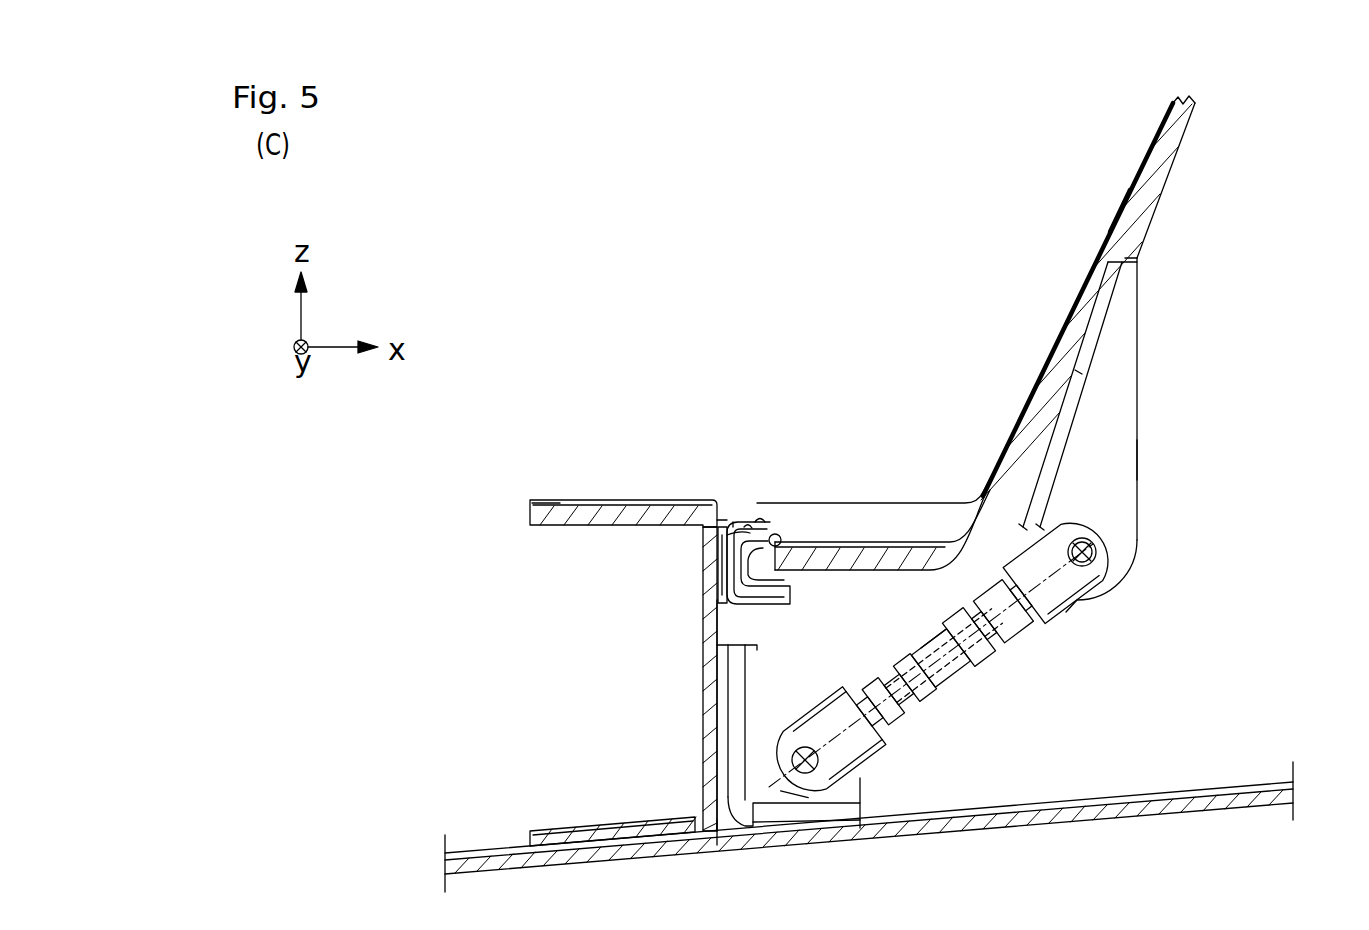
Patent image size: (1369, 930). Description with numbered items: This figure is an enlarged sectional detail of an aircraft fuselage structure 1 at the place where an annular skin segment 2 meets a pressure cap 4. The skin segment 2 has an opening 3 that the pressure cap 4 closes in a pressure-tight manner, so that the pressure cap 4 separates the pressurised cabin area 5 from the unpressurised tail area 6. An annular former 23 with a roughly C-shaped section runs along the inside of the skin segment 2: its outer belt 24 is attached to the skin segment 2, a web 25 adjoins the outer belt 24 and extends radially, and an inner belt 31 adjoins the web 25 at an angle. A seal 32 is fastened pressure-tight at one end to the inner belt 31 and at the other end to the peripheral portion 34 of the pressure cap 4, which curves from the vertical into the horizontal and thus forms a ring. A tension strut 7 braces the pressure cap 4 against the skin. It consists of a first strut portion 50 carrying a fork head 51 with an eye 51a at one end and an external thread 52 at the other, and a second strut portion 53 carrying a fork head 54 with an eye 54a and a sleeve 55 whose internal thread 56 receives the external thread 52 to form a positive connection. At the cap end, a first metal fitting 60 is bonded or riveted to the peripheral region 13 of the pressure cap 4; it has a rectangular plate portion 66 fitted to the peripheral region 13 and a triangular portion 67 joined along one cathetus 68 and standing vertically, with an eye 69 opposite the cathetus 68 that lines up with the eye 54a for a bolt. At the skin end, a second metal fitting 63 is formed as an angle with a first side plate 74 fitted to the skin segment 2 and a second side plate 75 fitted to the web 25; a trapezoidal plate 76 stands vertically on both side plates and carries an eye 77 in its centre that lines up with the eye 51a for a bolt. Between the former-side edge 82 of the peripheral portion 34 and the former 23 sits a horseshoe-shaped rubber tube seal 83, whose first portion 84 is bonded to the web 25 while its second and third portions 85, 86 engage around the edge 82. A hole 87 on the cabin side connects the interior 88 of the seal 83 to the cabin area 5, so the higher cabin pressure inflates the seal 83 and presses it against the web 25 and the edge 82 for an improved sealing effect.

The fuselage structure 1 is at (686, 182).
The annular skin segment 2 is at (1056, 812).
The opening 3 is at (1121, 86).
The pressure cap 4 is at (1176, 150).
The cabin area 5 is at (742, 309).
The tail area 6 is at (1320, 586).
The tension strut 7 is at (964, 690).
The peripheral region 13 is at (1120, 207).
The former 23 is at (542, 488).
The outer belt 24 is at (568, 831).
The web 25 is at (710, 618).
The inner belt 31 is at (610, 505).
The seal 32 is at (750, 528).
The peripheral portion 34 is at (871, 503).
The first strut portion 50 is at (880, 718).
The fork head 51 is at (836, 712).
The eye 51a is at (805, 762).
The external thread 52 is at (922, 662).
The second strut portion 53 is at (1010, 612).
The fork head 54 is at (1062, 596).
The eye 54a is at (1082, 552).
The sleeve 55 is at (975, 640).
The internal thread 56 is at (952, 650).
The first metal fitting 60 is at (1122, 400).
The second metal fitting 63 is at (716, 832).
The rectangular plate portion 66 is at (1127, 283).
The triangular portion 67 is at (1138, 458).
The cathetus 68 is at (1057, 428).
The eye 69 is at (1098, 552).
The first side plate 74 is at (826, 828).
The second side plate 75 is at (712, 700).
The trapezoidal plate 76 is at (818, 702).
The eye 77 is at (830, 770).
The former-side edge 82 is at (778, 534).
The seal 83 is at (718, 510).
The first portion 84 is at (712, 540).
The second portion 85 is at (762, 522).
The third portion 86 is at (793, 592).
The hole 87 is at (738, 522).
The interior 88 is at (721, 572).